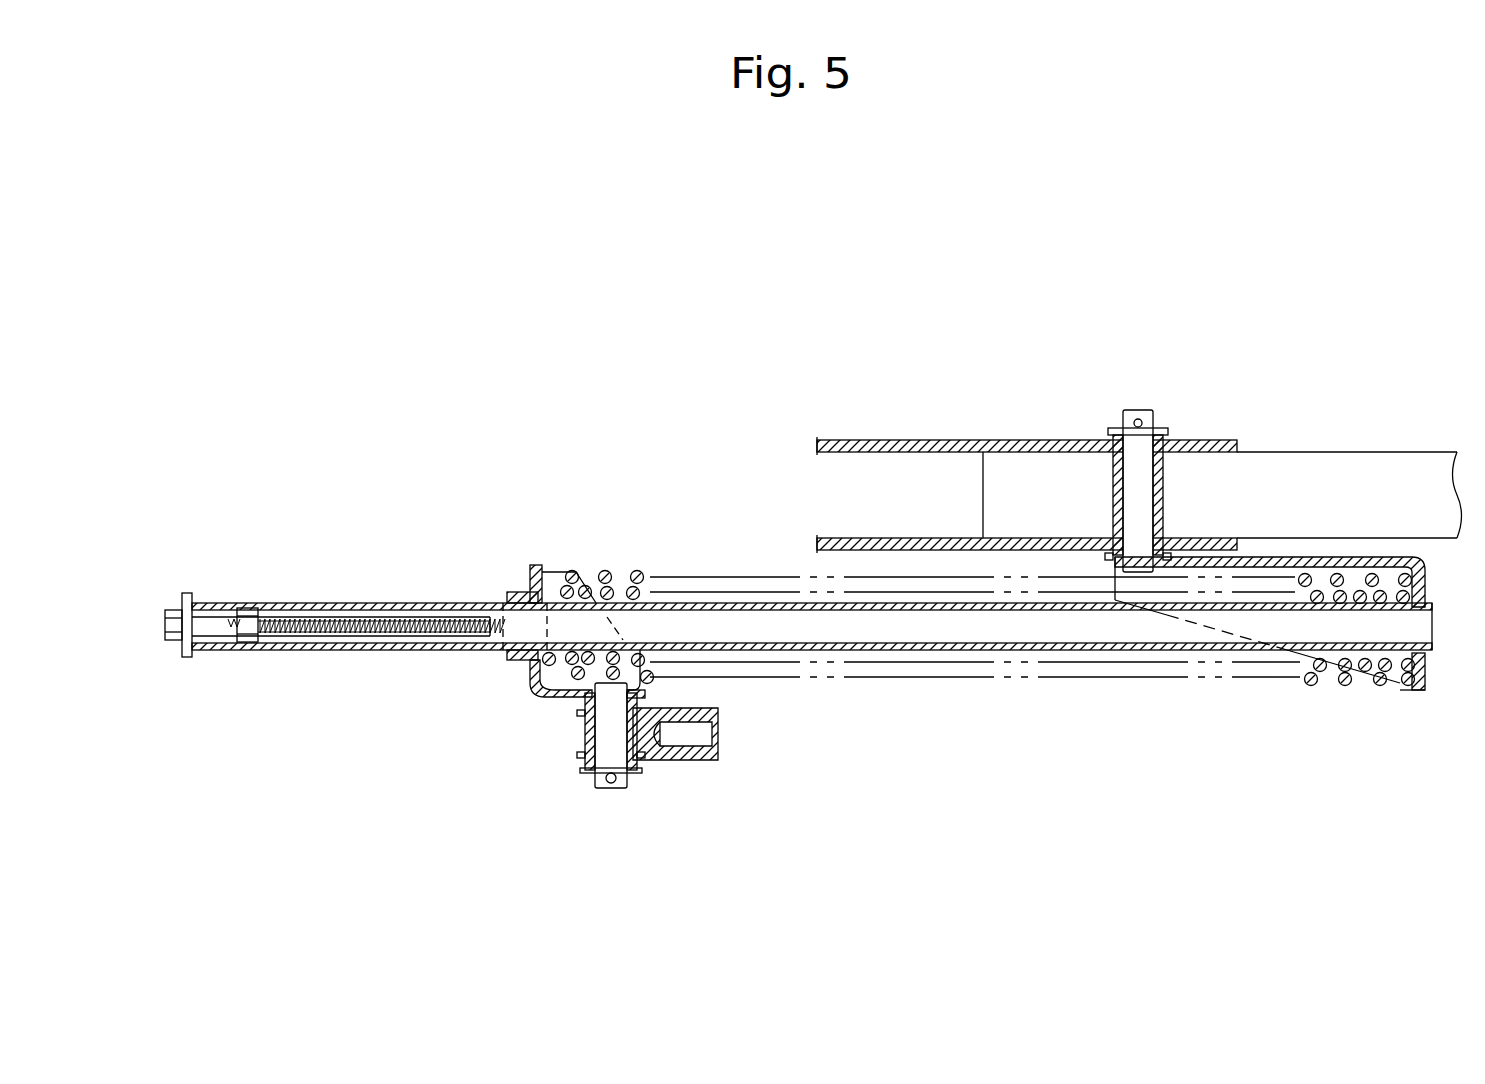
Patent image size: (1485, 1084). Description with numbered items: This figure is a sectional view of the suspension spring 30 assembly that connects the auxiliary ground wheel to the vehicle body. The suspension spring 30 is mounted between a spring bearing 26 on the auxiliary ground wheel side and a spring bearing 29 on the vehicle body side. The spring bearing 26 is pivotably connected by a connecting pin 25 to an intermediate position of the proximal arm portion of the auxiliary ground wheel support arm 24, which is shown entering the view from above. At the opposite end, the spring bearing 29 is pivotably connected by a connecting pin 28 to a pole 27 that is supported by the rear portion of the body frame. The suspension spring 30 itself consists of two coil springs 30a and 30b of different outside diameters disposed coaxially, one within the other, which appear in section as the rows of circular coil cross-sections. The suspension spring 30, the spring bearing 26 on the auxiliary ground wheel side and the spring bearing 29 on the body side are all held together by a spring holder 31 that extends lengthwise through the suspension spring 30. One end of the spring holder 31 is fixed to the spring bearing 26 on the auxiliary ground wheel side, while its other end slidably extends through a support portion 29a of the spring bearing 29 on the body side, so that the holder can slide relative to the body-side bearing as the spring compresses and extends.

The auxiliary ground wheel support arm 24 is at (1305, 460).
The connecting pin 25 is at (1141, 408).
The spring bearing 26 is at (1323, 555).
The pole 27 is at (720, 732).
The connecting pin 28 is at (612, 790).
The spring bearing 29 is at (541, 698).
The support portion 29a is at (505, 600).
The suspension spring 30 is at (1349, 700).
The coil spring 30a is at (1310, 688).
The coil spring 30b is at (1390, 718).
The spring holder 31 is at (1083, 650).